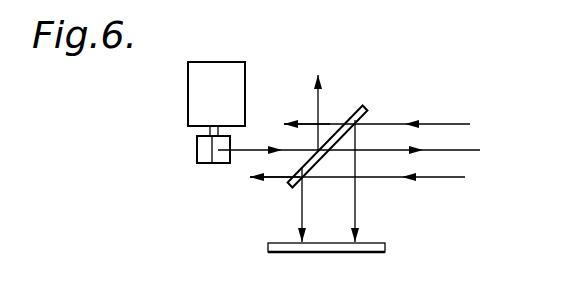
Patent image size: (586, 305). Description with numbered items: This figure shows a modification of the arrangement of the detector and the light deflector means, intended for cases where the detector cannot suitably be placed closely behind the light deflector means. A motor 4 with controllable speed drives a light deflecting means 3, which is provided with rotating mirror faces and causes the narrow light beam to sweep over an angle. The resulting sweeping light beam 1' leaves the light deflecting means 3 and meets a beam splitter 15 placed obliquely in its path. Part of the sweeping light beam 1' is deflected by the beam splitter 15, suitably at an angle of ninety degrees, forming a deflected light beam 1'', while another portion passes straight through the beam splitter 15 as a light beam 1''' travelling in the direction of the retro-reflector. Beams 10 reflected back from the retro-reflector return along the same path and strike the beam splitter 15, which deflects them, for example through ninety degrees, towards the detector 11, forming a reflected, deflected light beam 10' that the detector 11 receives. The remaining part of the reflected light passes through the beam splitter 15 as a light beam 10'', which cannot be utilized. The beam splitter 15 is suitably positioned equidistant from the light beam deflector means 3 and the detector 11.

The motor 4 is at (213, 68).
The light deflecting means 3 is at (206, 161).
The sweeping light beam 1' is at (269, 126).
The deflected light beam 1'' is at (334, 103).
The transmitted light beam 1''' is at (417, 142).
The reflected light beams 10 is at (379, 135).
The transmitted reflected light beam 10'' is at (290, 119).
The beam splitter 15 is at (352, 110).
The reflected, deflected light beam 10' is at (351, 181).
The detector 11 is at (385, 246).